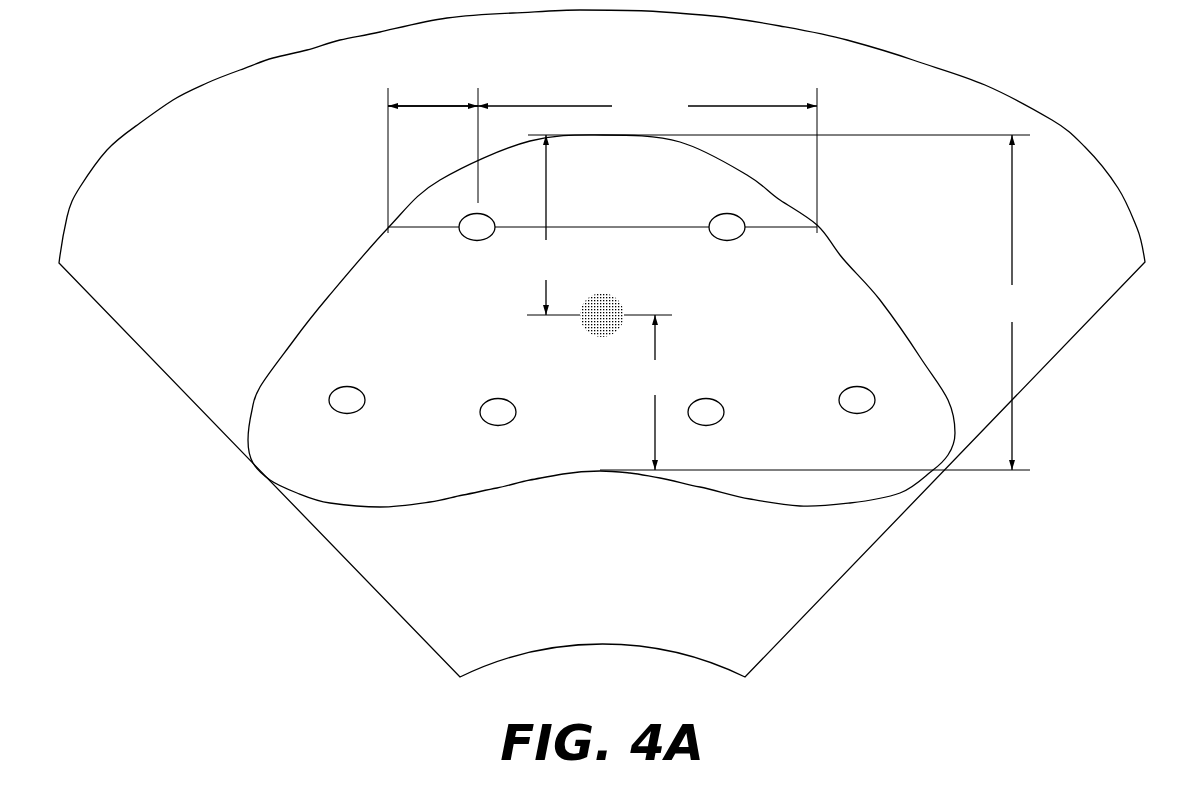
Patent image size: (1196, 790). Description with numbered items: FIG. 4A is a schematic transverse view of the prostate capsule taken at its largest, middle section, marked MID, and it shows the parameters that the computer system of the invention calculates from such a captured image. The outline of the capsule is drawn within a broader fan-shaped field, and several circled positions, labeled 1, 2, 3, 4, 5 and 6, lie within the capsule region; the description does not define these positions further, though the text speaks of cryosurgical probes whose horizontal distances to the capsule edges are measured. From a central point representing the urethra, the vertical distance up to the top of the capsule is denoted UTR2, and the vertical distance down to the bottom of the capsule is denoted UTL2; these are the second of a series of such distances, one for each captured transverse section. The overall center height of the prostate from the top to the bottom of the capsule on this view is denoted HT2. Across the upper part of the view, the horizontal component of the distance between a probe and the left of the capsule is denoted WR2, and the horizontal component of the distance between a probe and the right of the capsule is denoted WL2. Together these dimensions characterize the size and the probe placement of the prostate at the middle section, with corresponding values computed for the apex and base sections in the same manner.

The first measurement point (upper tread region) 1 is at (477, 227).
The second measurement point (upper tread region) 2 is at (727, 227).
The third measurement point (left side) 3 is at (347, 400).
The fourth measurement point (right side) 4 is at (857, 400).
The fifth measurement point (lower left) 5 is at (498, 412).
The sixth measurement point (lower right) 6 is at (706, 412).
The horizontal distance from probe to left of prostate capsule WR2 is at (388, 106).
The horizontal distance from probe to right of prostate capsule WL2 is at (647, 106).
The transverse view center height HT2 is at (1012, 302).
The vertical distance from top of capsule to urethra UTR2 is at (545, 225).
The vertical distance from urethra to bottom of capsule UTL2 is at (655, 392).
The middle section of the prostate MID is at (602, 578).